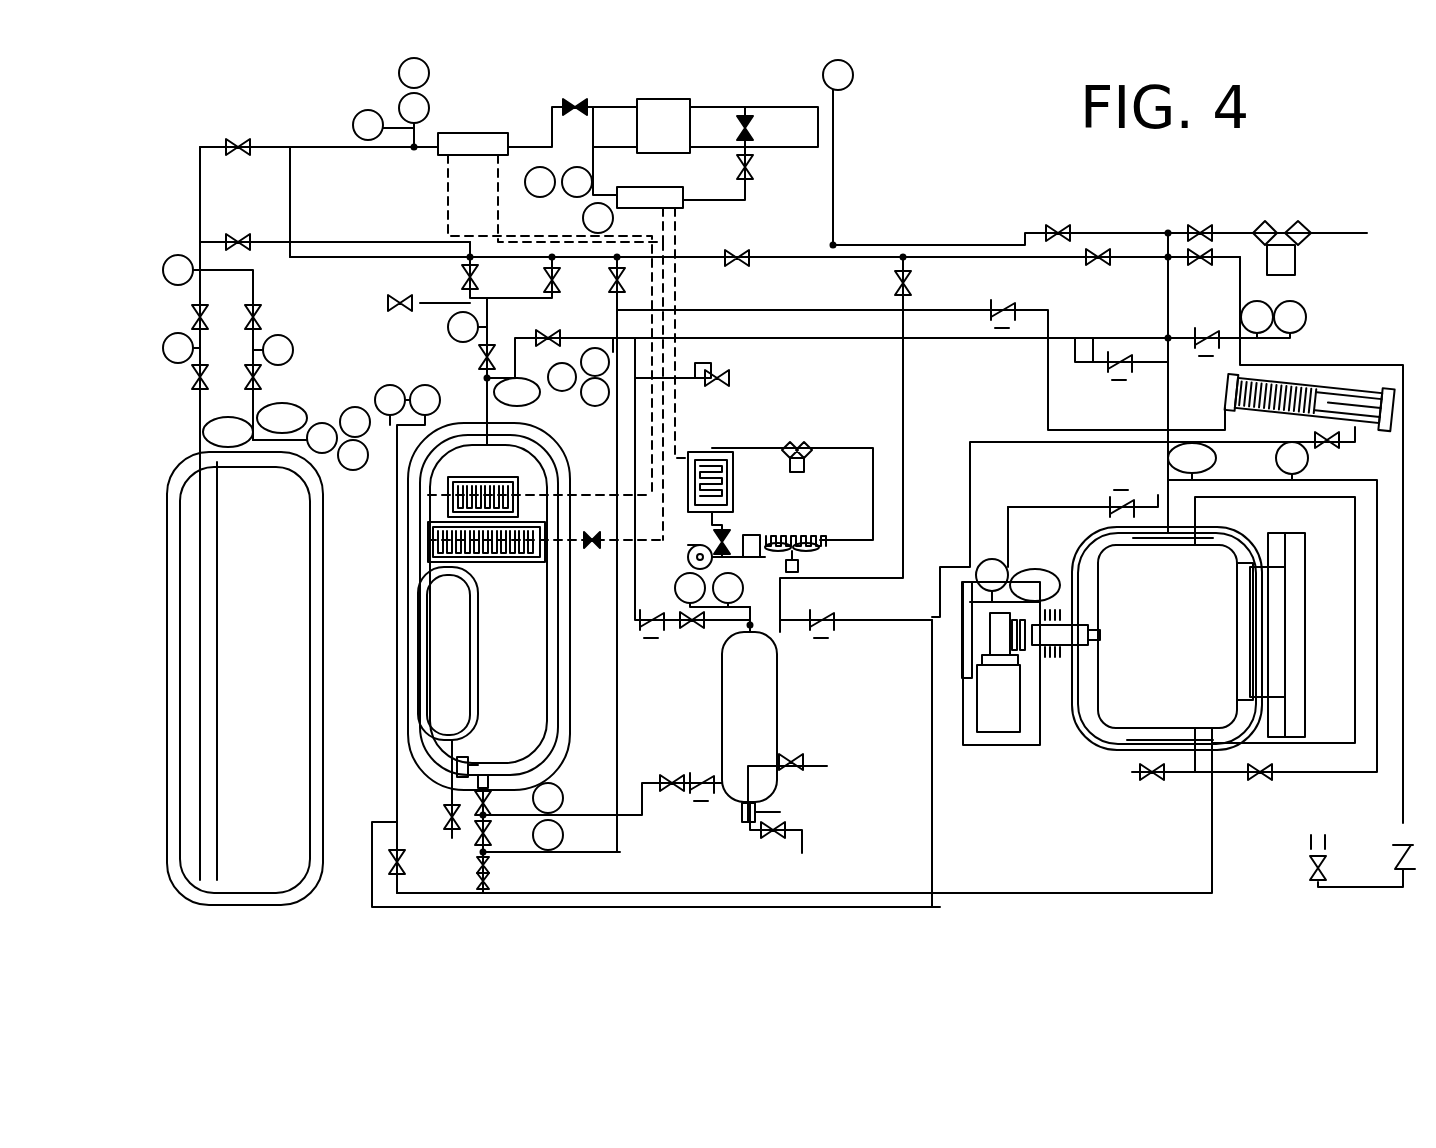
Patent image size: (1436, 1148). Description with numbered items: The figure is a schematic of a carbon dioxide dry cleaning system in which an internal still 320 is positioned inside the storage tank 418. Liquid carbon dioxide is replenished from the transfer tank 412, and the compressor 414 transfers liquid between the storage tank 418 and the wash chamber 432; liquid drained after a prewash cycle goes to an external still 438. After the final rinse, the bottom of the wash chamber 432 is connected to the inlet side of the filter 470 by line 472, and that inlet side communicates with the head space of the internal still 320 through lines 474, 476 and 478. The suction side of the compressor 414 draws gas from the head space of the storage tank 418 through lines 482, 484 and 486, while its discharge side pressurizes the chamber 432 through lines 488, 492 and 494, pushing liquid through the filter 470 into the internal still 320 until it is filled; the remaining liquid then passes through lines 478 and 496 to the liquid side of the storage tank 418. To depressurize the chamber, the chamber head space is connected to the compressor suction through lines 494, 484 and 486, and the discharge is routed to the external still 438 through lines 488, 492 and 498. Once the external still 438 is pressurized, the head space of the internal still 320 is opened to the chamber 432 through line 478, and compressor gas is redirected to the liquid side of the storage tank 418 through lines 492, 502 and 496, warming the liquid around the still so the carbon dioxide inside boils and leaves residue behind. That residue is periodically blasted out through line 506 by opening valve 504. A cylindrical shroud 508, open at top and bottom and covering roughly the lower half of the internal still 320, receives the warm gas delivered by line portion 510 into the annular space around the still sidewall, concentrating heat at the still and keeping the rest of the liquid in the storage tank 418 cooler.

The internal still 320 is at (478, 602).
The transfer tank 412 is at (167, 497).
The compressor 414 is at (688, 102).
The storage tank 418 is at (408, 684).
The wash chamber 432 is at (1100, 745).
The external still 438 is at (722, 708).
The filter 470 is at (1300, 385).
The line 472 is at (1377, 484).
The line 474 is at (1046, 443).
The line 476 is at (932, 708).
The line 478 is at (410, 782).
The line 482 is at (466, 262).
The line 484 is at (800, 245).
The line 486 is at (833, 217).
The line 488 is at (522, 132).
The line 492 is at (290, 186).
The line 494 is at (1168, 306).
The line 496 is at (480, 860).
The line 498 is at (903, 382).
The line 502 is at (620, 716).
The valve 504 is at (445, 830).
The line 506 is at (456, 768).
The cylindrical shroud 508 is at (490, 745).
The line portion 510 is at (482, 772).